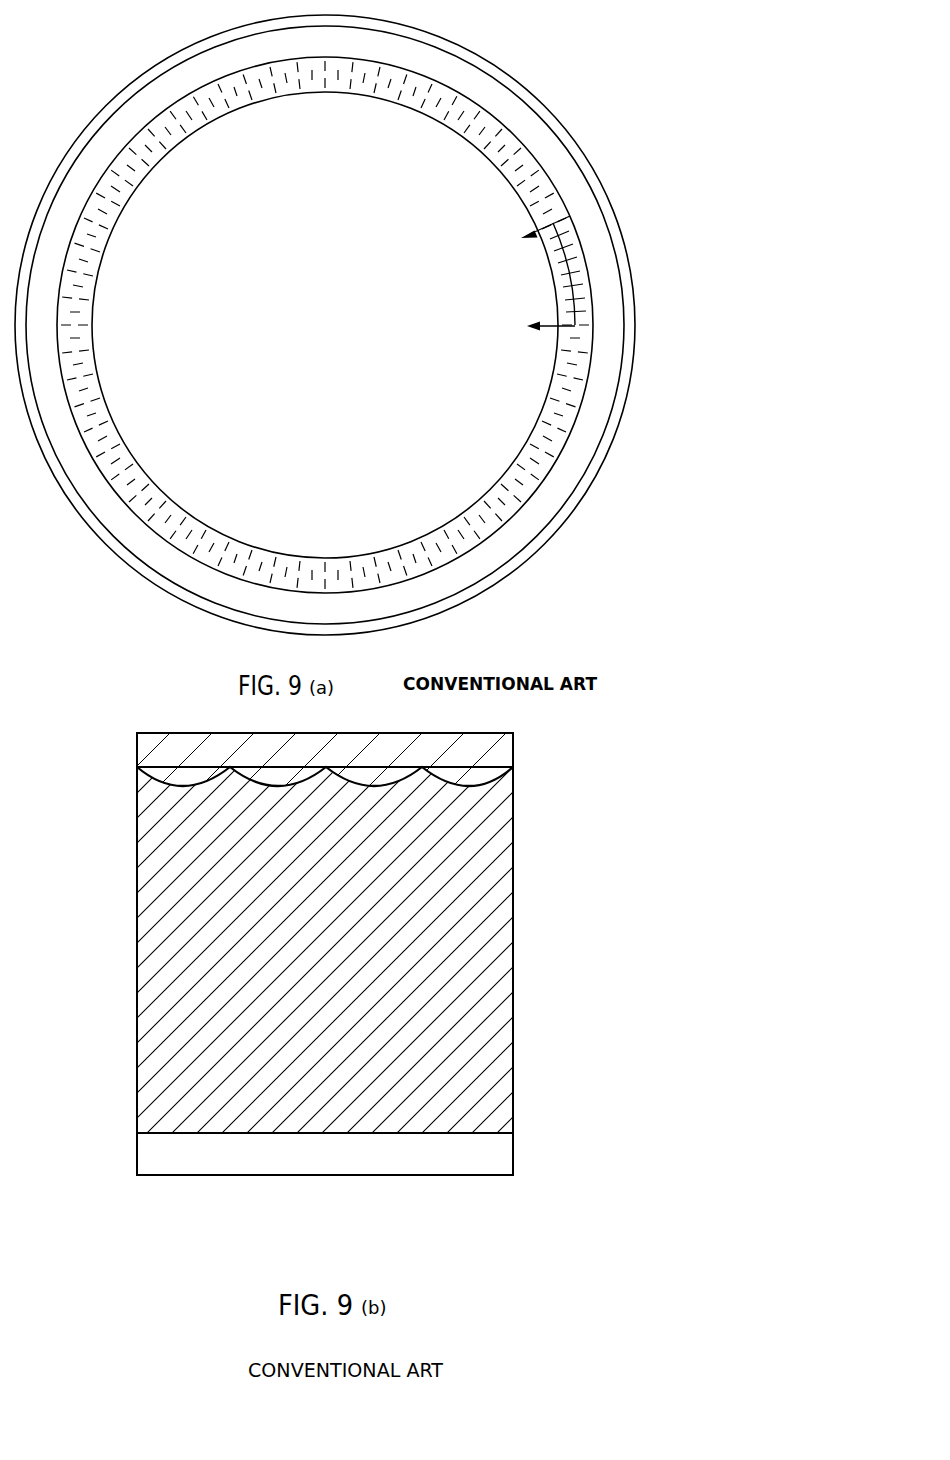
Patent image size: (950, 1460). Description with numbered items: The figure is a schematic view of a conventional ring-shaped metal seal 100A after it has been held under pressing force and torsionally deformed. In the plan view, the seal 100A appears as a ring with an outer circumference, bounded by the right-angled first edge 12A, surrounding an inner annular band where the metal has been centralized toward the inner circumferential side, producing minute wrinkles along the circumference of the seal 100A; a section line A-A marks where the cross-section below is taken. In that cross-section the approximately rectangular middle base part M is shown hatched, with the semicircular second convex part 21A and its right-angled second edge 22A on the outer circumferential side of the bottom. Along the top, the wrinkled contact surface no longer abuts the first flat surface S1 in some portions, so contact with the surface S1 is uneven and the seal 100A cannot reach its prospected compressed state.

The metal seal 100A is at (408, 320).
The first edge 12A is at (477, 60).
The second convex part 21A is at (542, 107).
The first surface S1 is at (485, 770).
The middle base part M is at (205, 953).
The second edge 22A is at (258, 1175).